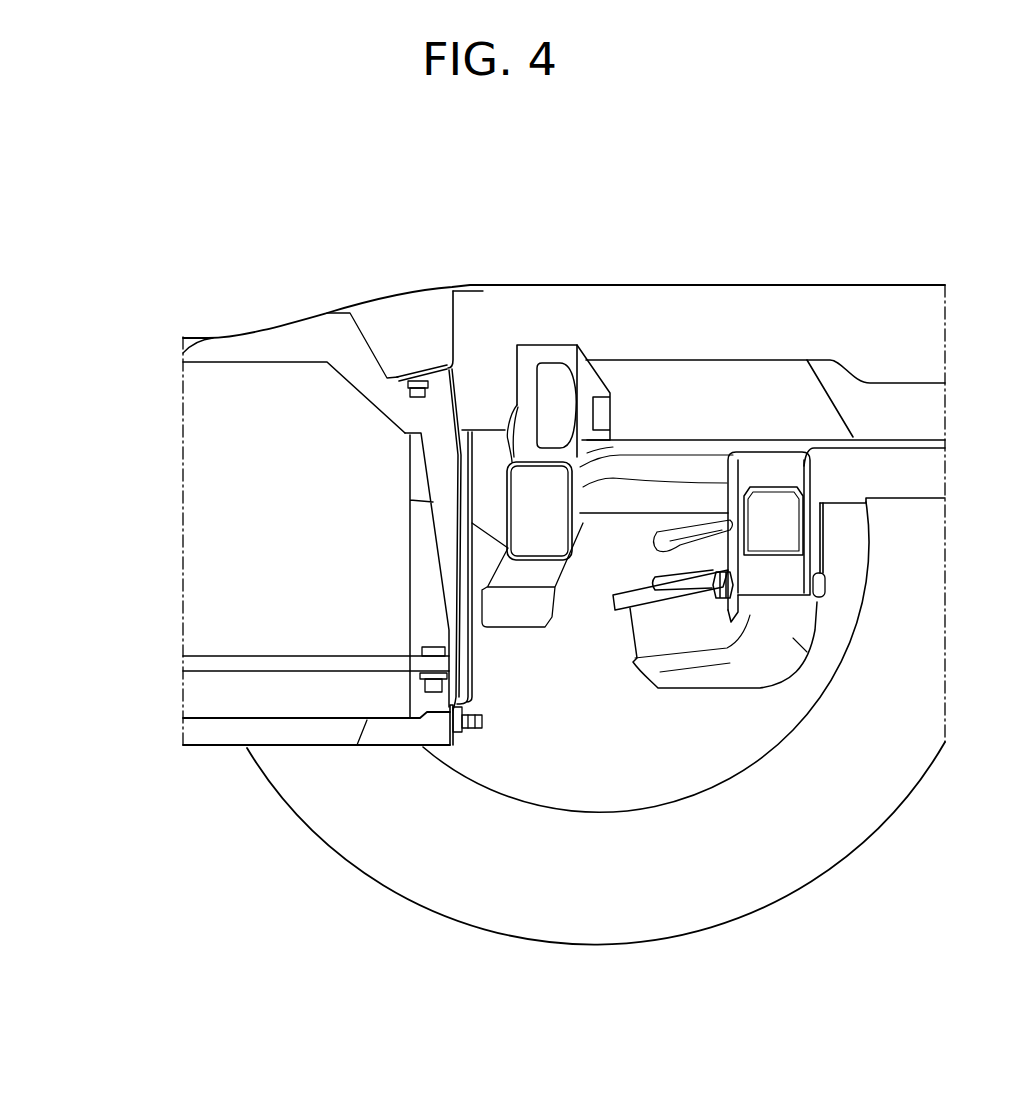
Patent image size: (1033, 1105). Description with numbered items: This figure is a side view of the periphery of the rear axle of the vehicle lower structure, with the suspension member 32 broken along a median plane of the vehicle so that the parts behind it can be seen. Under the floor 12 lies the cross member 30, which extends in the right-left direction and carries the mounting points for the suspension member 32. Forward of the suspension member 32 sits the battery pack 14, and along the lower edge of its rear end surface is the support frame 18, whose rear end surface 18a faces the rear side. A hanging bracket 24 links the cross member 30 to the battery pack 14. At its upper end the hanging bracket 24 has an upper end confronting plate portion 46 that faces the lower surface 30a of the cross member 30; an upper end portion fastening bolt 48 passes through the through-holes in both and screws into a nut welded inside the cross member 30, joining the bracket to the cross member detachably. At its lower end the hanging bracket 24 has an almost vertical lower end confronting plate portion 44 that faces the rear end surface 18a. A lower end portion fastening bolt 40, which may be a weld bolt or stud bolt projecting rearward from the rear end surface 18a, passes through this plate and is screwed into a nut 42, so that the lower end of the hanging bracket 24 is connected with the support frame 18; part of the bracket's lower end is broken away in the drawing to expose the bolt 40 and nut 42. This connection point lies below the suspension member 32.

The floor 12 is at (183, 352).
The battery pack 14 is at (265, 533).
The support frame 18 is at (393, 735).
The rear end surface 18a is at (455, 748).
The hanging bracket 24 is at (452, 563).
The cross member 30 is at (453, 327).
The lower surface 30a is at (403, 380).
The suspension member 32 is at (487, 485).
The lower end portion fastening bolt 40 is at (482, 730).
The nut 42 is at (470, 735).
The lower end confronting plate portion 44 is at (450, 710).
The upper end confronting plate portion 46 is at (400, 421).
The upper end portion fastening bolt 48 is at (442, 386).